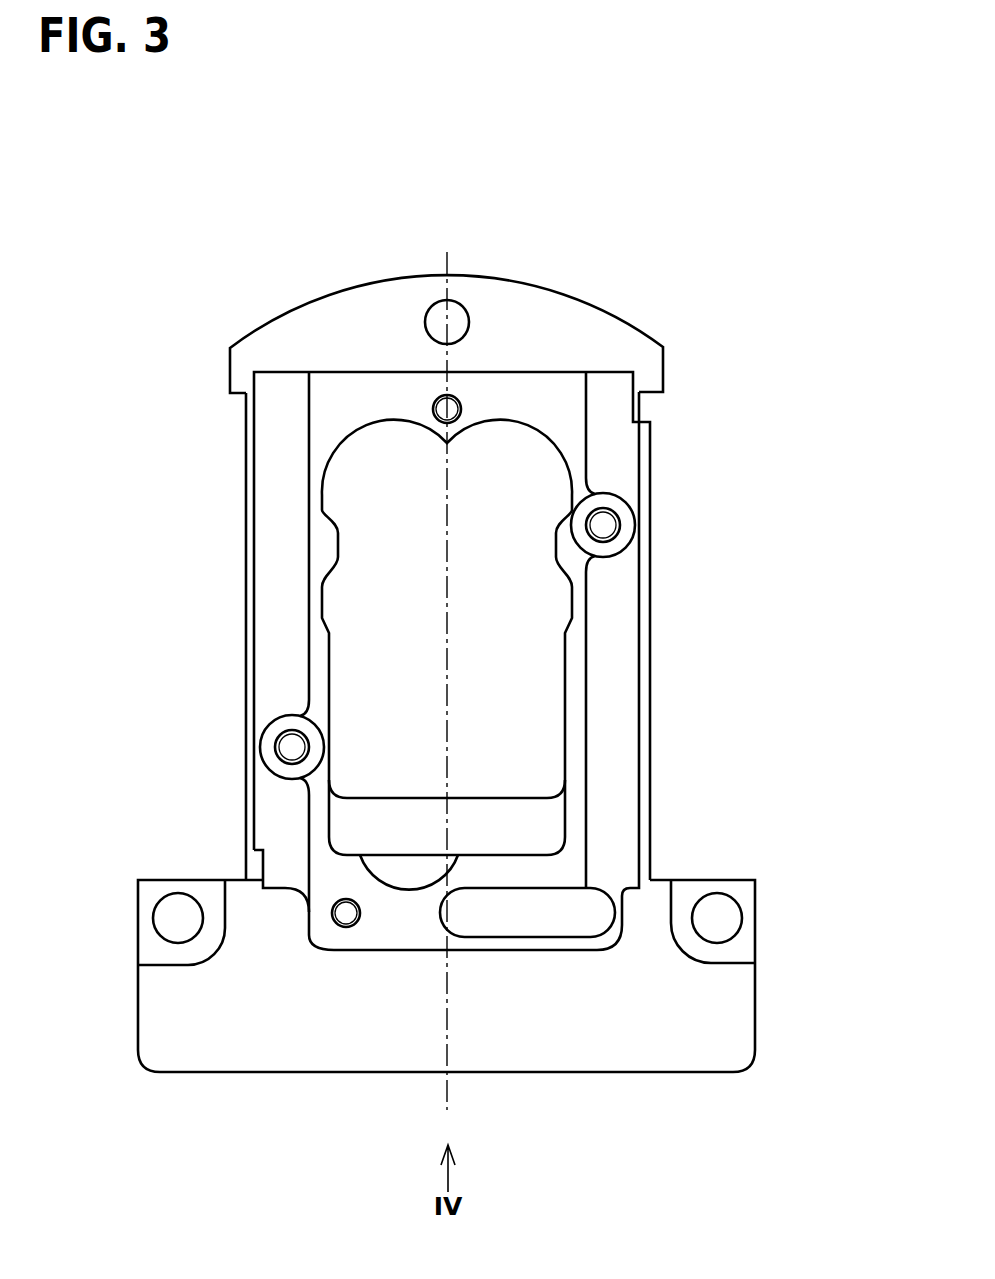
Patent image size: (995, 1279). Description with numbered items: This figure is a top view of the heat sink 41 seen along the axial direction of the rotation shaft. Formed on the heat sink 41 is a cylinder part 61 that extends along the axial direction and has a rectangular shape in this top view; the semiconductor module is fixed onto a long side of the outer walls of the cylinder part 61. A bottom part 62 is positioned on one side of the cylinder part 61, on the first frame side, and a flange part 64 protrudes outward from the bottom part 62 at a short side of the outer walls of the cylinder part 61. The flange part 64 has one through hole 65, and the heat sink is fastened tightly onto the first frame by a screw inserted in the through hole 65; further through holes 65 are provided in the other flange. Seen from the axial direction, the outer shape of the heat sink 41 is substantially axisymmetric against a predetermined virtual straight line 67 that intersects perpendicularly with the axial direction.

The heat sink 41 is at (262, 327).
The cylinder part 61 is at (317, 640).
The bottom part 62 is at (507, 499).
The flange part 64 is at (578, 315).
The through hole 65 is at (438, 330).
The virtual straight line 67 is at (451, 262).